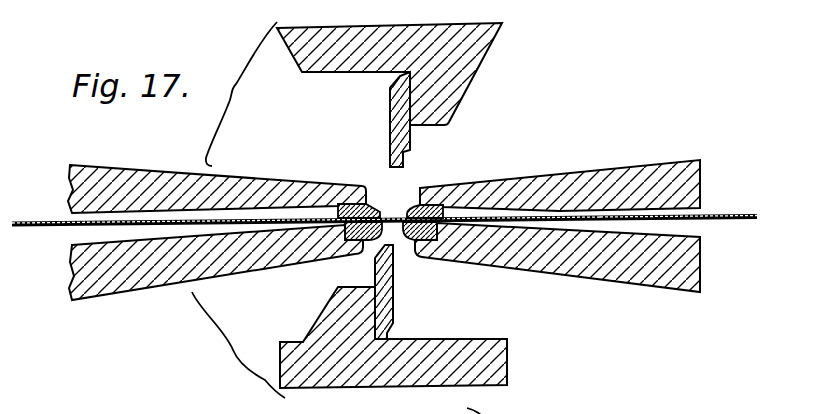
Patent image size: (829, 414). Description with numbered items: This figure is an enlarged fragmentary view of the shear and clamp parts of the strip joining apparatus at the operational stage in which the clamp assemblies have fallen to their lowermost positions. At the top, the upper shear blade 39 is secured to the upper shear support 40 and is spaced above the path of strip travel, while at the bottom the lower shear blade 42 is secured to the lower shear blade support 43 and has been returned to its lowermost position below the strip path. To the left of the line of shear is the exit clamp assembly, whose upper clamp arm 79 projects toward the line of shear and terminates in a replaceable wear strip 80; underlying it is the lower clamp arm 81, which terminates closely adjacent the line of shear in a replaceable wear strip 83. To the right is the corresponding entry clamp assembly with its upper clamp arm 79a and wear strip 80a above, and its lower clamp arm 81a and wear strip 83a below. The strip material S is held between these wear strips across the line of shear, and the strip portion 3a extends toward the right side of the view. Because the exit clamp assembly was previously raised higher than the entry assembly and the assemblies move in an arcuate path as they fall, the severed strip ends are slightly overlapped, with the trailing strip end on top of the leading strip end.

The strip material S is at (27, 221).
The strip portion 3a is at (727, 213).
The upper clamp arm 79 is at (97, 176).
The lower clamp arm 81 is at (135, 278).
The upper clamp arm 79a is at (596, 182).
The lower clamp arm 81a is at (602, 268).
The replaceable wear strip 80 is at (373, 203).
The replaceable wear strip 80a is at (408, 203).
The replaceable wear strip 83 is at (347, 237).
The replaceable wear strip 83a is at (403, 240).
The upper shear support 40 is at (468, 52).
The upper shear blade 39 is at (392, 104).
The lower shear blade support 43 is at (456, 340).
The lower shear blade 42 is at (396, 302).